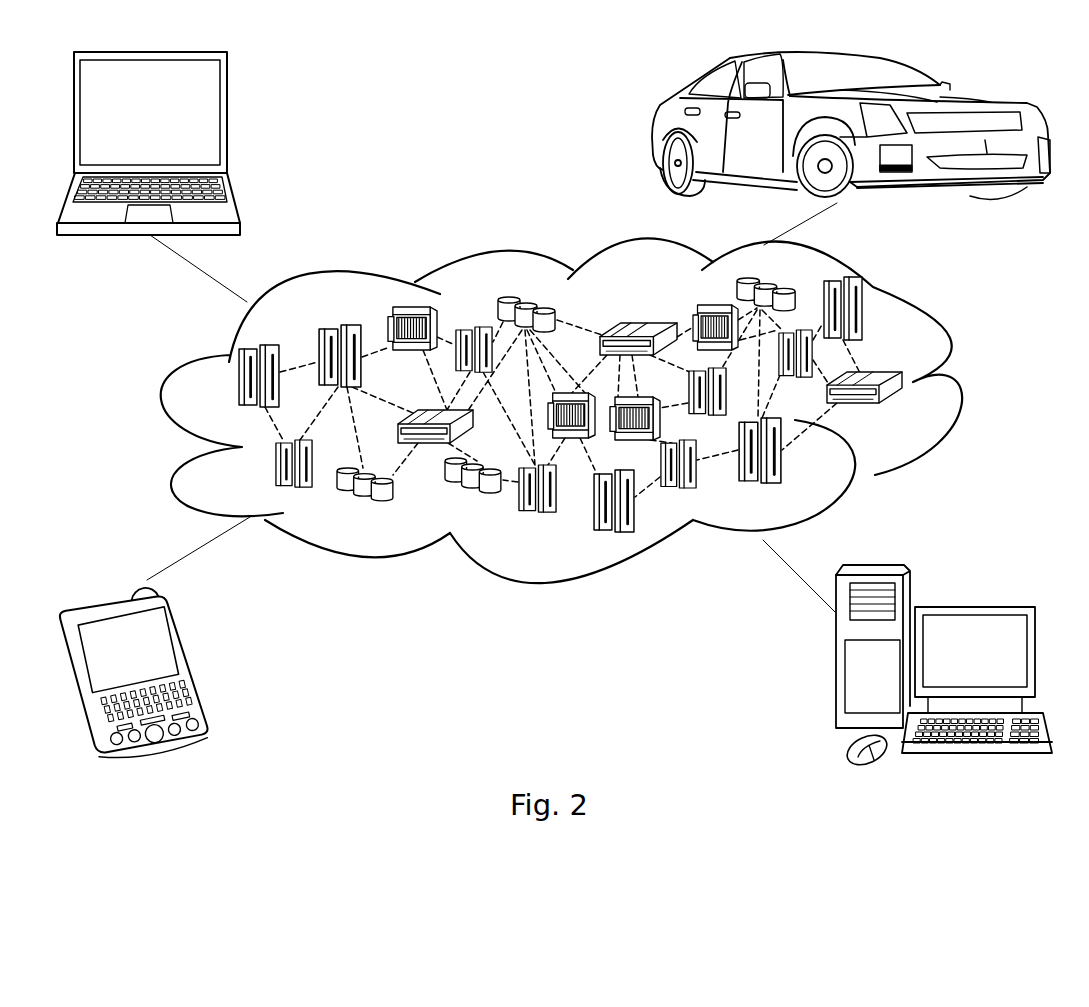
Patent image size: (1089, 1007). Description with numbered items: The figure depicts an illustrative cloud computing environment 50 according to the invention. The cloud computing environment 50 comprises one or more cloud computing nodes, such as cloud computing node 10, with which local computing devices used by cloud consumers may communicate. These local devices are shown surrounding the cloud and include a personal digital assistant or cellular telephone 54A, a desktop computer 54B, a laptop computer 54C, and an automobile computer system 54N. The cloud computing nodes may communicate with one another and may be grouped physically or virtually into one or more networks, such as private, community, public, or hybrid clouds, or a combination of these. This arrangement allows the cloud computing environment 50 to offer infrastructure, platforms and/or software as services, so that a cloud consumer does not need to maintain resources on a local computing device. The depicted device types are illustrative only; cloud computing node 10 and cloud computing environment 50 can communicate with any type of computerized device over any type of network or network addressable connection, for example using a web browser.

The cloud computing node 10 is at (902, 411).
The cloud computing environment 50 is at (968, 398).
The personal digital assistant (PDA) or cellular telephone 54A is at (195, 672).
The desktop computer 54B is at (834, 704).
The laptop computer 54C is at (242, 140).
The automobile computer system 54N is at (657, 132).